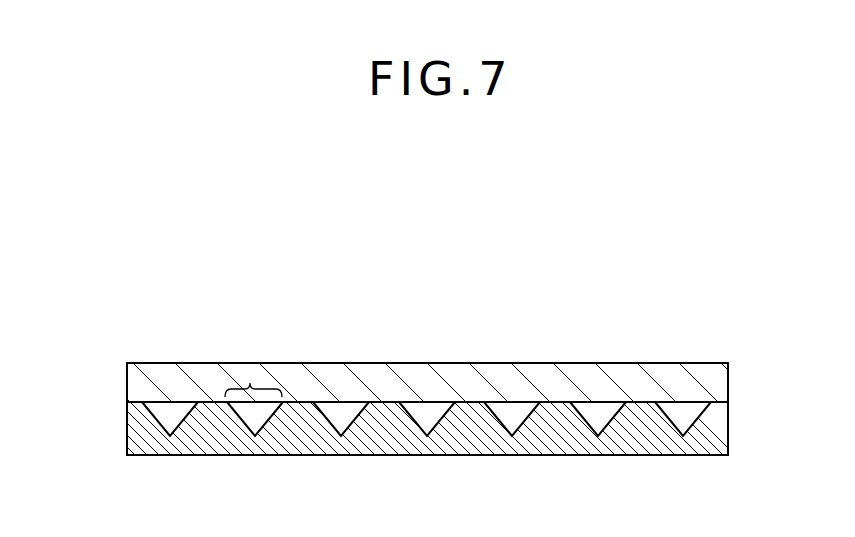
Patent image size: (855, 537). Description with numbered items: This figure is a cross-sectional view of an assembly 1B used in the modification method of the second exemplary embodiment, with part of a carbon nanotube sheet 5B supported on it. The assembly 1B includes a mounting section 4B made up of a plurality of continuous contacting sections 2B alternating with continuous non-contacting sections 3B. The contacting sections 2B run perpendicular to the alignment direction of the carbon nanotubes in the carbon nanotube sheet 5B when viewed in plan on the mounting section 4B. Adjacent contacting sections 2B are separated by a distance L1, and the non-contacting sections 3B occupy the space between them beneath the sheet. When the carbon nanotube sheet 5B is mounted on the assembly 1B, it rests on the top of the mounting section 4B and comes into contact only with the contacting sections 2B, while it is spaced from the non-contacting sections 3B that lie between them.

The assembly 1B is at (112, 461).
The contacting section 2B is at (637, 410).
The non-contacting section 3B is at (432, 403).
The mounting section 4B is at (588, 308).
The carbon nanotube sheet 5B is at (722, 382).
The distance between adjacent contacting sections L1 is at (250, 383).